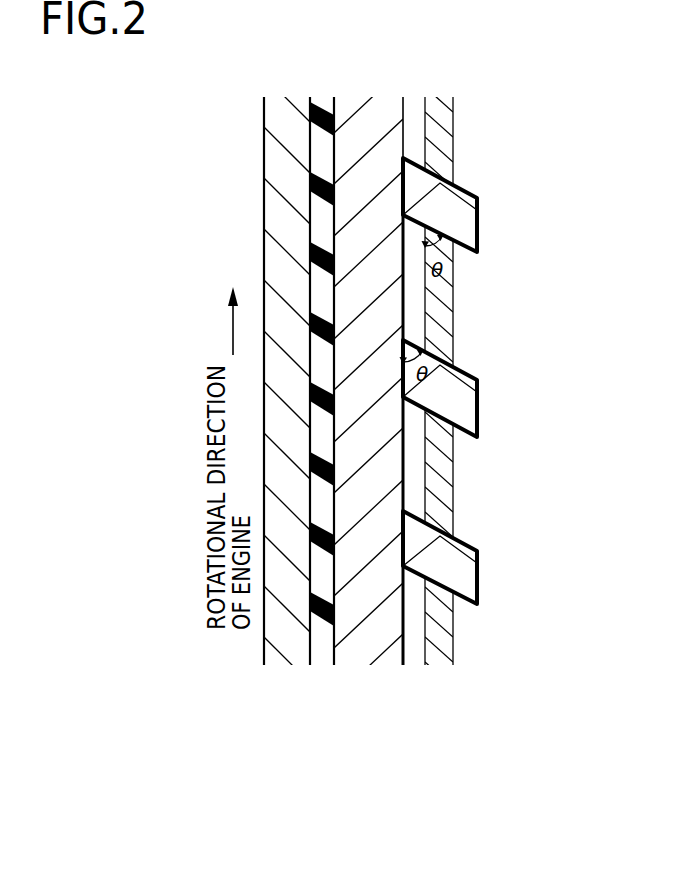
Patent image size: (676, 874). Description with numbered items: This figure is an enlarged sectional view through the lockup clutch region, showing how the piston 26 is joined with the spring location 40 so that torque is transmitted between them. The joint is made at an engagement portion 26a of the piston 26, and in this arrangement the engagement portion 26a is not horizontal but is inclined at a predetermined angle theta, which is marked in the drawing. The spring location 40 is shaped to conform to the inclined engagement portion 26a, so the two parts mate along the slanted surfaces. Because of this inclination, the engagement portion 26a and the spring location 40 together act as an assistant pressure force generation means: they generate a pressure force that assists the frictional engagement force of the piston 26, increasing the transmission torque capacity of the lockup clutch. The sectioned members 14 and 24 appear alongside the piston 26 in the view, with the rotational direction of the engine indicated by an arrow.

The crankshaft 14 is at (282, 115).
The intermediate layer 24 is at (318, 115).
The piston 26 is at (383, 115).
The engagement portion 26a is at (440, 403).
The spring location 40 is at (440, 313).